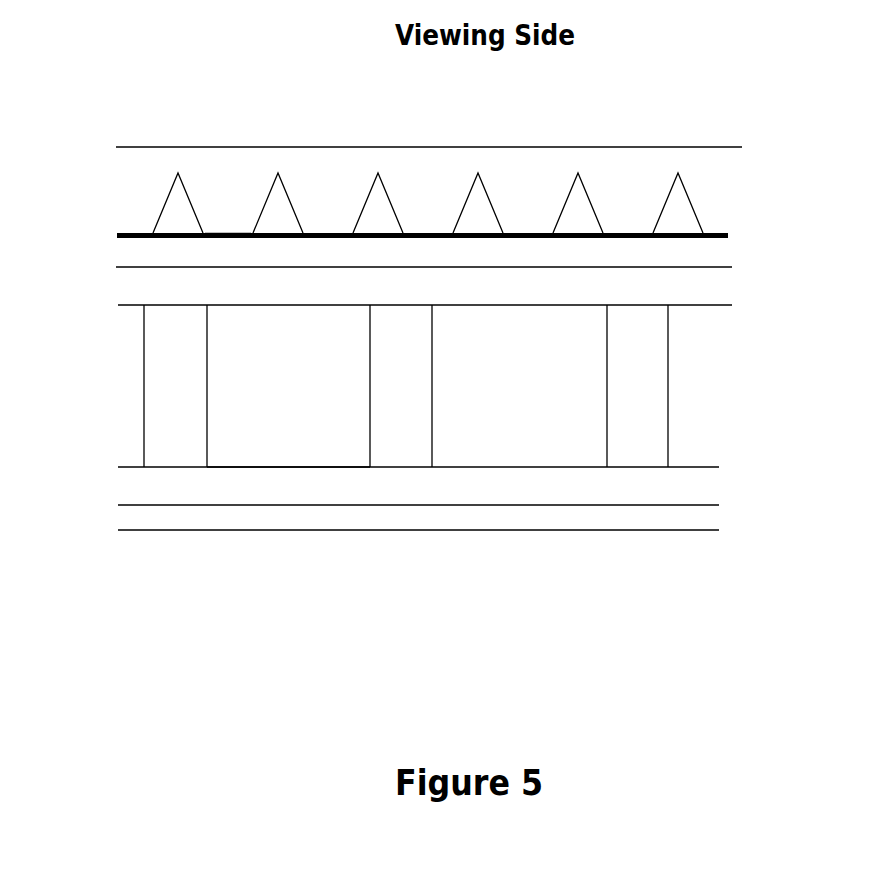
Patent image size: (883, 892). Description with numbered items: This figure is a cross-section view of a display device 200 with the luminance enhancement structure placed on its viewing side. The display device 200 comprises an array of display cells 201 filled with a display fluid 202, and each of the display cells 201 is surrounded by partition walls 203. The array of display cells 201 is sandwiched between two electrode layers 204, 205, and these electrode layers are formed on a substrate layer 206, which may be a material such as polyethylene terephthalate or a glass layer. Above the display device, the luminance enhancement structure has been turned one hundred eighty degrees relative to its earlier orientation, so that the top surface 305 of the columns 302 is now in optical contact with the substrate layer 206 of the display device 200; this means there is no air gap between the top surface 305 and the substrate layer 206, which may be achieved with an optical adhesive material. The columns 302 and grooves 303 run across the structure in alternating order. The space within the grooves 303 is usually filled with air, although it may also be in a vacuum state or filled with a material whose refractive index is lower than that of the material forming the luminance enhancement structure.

The display device 200 is at (720, 393).
The display cells 201 is at (243, 380).
The display fluid 202 is at (258, 418).
The partition walls 203 is at (406, 418).
The electrode layer 204 is at (717, 285).
The electrode layer 205 is at (532, 480).
The substrate layer 206 is at (128, 249).
The columns 302 is at (328, 210).
The grooves 303 is at (178, 210).
The top surface 305 is at (228, 233).